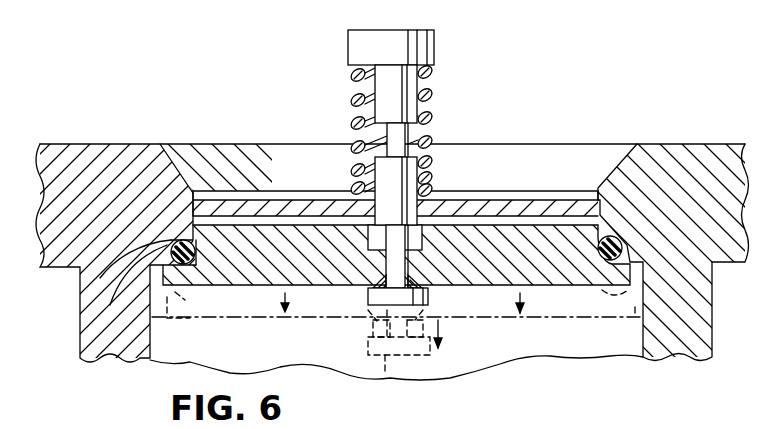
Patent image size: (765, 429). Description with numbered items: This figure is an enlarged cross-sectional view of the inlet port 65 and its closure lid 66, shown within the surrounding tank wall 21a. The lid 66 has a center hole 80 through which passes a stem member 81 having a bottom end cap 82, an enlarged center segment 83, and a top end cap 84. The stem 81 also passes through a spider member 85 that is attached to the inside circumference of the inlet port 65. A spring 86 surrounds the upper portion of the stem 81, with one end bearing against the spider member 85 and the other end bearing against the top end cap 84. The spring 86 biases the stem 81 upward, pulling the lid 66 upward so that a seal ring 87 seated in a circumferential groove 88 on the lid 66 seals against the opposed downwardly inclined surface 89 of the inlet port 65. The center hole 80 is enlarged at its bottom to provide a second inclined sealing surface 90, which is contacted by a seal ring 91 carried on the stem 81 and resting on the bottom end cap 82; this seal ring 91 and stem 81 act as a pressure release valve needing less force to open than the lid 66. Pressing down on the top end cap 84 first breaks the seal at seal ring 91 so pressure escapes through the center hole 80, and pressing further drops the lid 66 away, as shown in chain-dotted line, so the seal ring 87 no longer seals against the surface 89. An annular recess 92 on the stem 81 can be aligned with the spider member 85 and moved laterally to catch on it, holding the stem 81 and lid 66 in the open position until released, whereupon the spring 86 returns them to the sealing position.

The housing 21a is at (645, 143).
The seal ring 87 is at (80, 327).
The closure lid 66 is at (565, 285).
The spider member 85 is at (510, 190).
The inlet port 65 is at (563, 192).
The downwardly inclined surface 89 is at (168, 246).
The circumferential groove 88 is at (632, 280).
The spring 86 is at (430, 94).
The top end cap 84 is at (357, 48).
The stem member 81 is at (437, 53).
The annular recess 92 is at (409, 139).
The enlarged center segment 83 is at (373, 182).
The center hole 80 is at (430, 267).
The second inclined sealing surface 90 is at (405, 265).
The bottom end cap 82 is at (368, 303).
The seal ring 91 is at (367, 296).